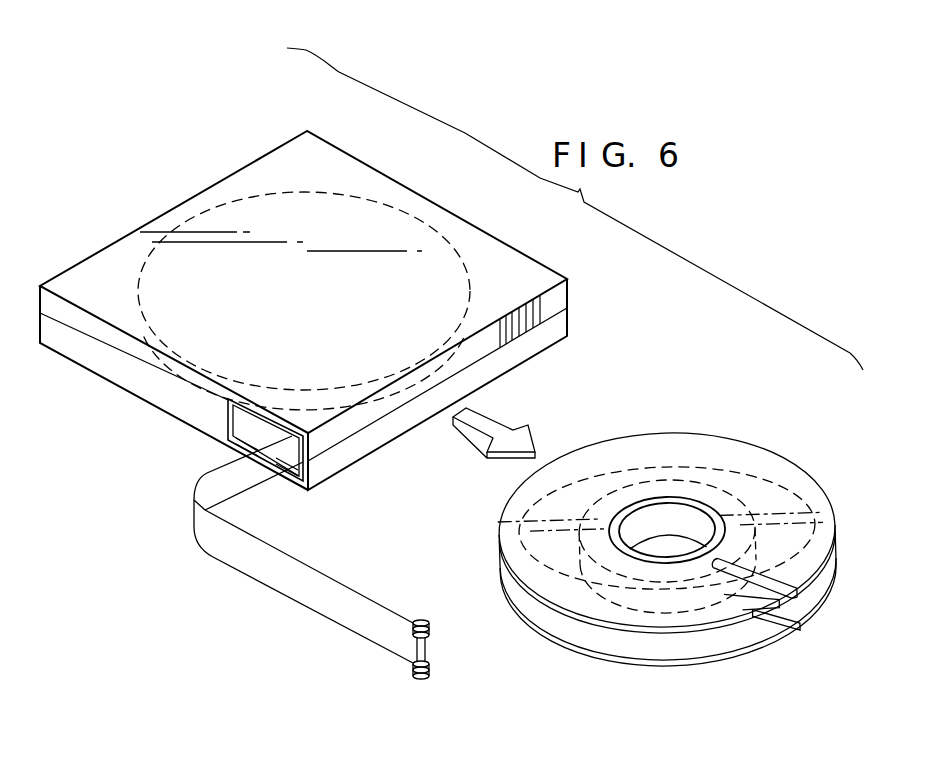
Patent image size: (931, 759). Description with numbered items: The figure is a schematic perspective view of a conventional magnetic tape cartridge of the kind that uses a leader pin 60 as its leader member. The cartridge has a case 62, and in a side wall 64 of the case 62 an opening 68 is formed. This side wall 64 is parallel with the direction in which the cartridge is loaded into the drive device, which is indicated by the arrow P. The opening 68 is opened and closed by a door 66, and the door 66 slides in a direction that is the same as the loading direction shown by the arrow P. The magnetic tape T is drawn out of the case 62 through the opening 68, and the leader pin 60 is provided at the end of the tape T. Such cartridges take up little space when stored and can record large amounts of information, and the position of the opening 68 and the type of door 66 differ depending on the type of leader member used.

The case 62 is at (415, 192).
The side wall 64 is at (117, 368).
The door 66 is at (227, 443).
The opening 68 is at (270, 425).
The leader pin 60 is at (428, 651).
The magnetic tape T is at (327, 603).
The loading direction arrow P is at (493, 424).